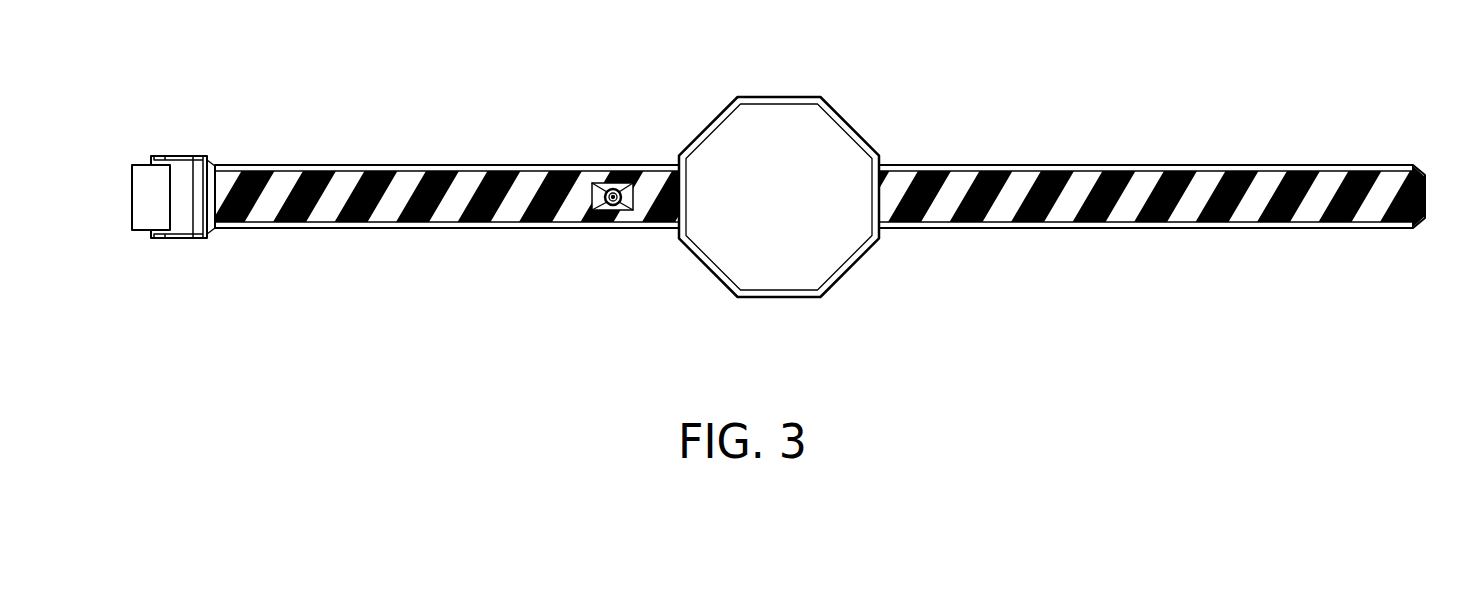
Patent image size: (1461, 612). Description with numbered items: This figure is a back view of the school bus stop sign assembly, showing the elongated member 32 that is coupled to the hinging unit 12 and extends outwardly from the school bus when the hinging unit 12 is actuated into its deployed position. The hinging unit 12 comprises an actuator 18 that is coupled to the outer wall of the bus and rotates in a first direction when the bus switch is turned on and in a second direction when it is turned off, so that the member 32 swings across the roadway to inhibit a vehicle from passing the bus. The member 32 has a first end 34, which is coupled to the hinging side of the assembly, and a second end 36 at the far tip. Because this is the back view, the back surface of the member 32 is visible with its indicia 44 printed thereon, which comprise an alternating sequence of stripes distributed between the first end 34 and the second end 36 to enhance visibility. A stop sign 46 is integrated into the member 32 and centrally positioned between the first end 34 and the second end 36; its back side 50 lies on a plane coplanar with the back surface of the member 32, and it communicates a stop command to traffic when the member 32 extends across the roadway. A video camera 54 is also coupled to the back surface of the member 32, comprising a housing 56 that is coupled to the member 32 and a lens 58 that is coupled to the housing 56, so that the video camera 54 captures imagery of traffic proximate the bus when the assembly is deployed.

The hinging unit 12 is at (150, 142).
The actuator 18 is at (142, 231).
The member 32 is at (830, 220).
The first end 34 is at (201, 177).
The second end 36 is at (1427, 197).
The indicia 44 is at (998, 202).
The stop sign 46 is at (811, 175).
The back side 50 is at (825, 250).
The video camera 54 is at (573, 206).
The housing 56 is at (590, 195).
The lens 58 is at (622, 182).